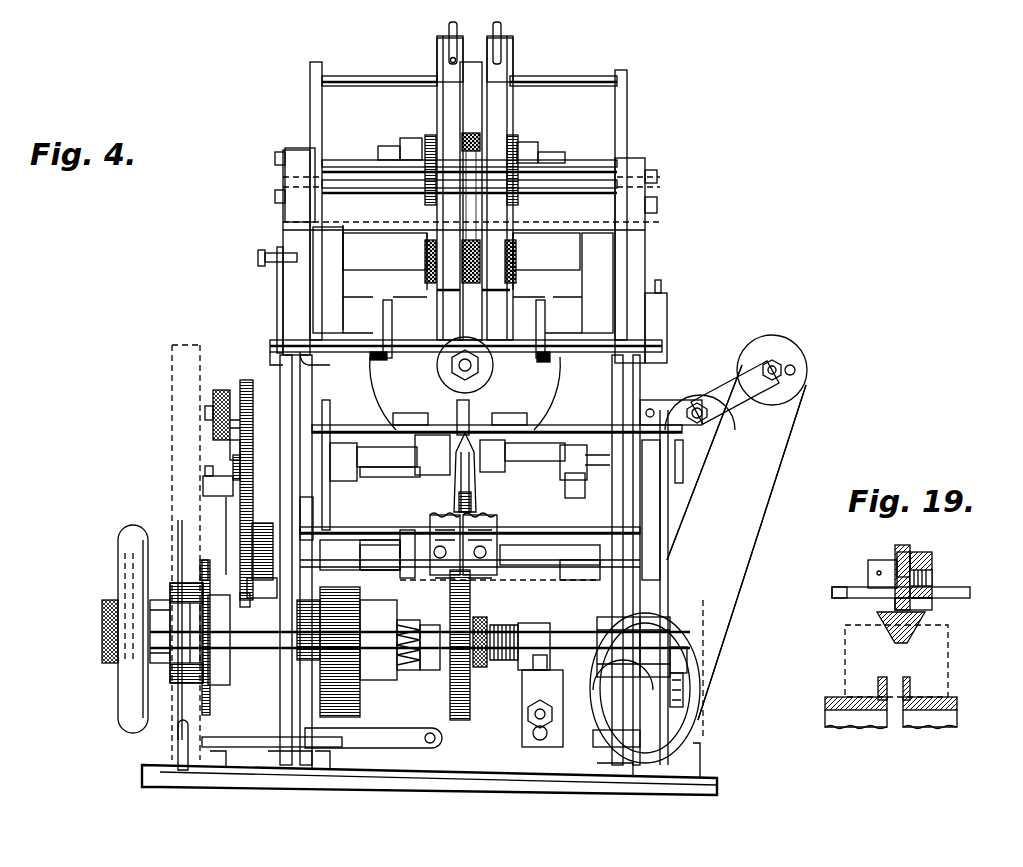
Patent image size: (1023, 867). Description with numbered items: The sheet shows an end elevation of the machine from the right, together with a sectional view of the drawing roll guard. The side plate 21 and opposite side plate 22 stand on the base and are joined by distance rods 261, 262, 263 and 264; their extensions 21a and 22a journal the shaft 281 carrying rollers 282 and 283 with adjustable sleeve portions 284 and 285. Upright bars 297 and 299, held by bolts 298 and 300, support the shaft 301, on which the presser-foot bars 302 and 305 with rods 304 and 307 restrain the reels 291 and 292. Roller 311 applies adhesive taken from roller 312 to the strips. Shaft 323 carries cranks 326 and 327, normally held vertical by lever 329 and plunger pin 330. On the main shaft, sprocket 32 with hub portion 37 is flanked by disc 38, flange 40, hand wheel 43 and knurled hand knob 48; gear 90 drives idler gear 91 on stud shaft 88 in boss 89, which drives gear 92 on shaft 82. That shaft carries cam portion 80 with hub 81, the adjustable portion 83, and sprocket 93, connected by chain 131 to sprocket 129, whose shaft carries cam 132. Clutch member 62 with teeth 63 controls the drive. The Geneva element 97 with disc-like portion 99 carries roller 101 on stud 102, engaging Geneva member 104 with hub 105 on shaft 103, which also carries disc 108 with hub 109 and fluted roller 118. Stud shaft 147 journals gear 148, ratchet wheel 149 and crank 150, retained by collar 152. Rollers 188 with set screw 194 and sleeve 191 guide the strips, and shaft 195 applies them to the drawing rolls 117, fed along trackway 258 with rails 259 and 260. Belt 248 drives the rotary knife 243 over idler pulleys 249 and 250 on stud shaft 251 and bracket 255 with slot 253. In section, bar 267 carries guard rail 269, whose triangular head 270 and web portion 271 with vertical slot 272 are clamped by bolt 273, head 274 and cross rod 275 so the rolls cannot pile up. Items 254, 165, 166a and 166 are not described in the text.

In FIG. 4, the rod 304 is at (449, 26).
In FIG. 4, the bar forming a presser-foot 302 is at (448, 50).
In FIG. 4, the rod 307 is at (503, 26).
In FIG. 4, the second bar forming a presser-foot 305 is at (505, 55).
In FIG. 4, the shaft 301 is at (548, 84).
In FIG. 4, the upright bar 297 is at (312, 105).
In FIG. 4, the reel 291 is at (437, 105).
In FIG. 4, the reel 292 is at (513, 105).
In FIG. 4, the bar 299 is at (627, 105).
In FIG. 4, the sleeve portion 284 is at (410, 138).
In FIG. 4, the roller 282 is at (385, 146).
In FIG. 4, the roller 311 is at (525, 137).
In FIG. 4, the sleeve portion 285 is at (540, 144).
In FIG. 4, the second roller 283 is at (553, 152).
In FIG. 4, the shaft 281 is at (575, 160).
In FIG. 4, the bolts 298 is at (283, 170).
In FIG. 4, the extension 21a is at (283, 220).
In FIG. 4, the plunger pin 330 is at (258, 257).
In FIG. 4, the lever 329 is at (277, 296).
In FIG. 4, the housing 254 is at (395, 268).
In FIG. 4, the roller 312 is at (518, 257).
In FIG. 4, the bolts 300 is at (657, 205).
In FIG. 4, the extension 22a is at (645, 228).
In FIG. 4, the crank 326 is at (388, 323).
In FIG. 4, the crank 327 is at (537, 323).
In FIG. 4, the shaft 323 is at (466, 355).
In FIG. 4, the sprocket 129 is at (326, 405).
In FIG. 4, the distance rod 264 is at (431, 383).
In FIG. 19, the distance rod 264 is at (838, 590).
In FIG. 4, the rotary knife 243 is at (558, 370).
In FIG. 4, the sleeve portion 191 is at (412, 413).
In FIG. 4, the set screw 194 is at (523, 397).
In FIG. 4, the roller 188 is at (480, 415).
In FIG. 4, the distance rod 263 is at (345, 425).
In FIG. 4, the rack 165 is at (245, 378).
In FIG. 4, the knurled knob 166a is at (225, 390).
In FIG. 4, the knob stud 166 is at (210, 412).
In FIG. 4, the gear 148 is at (240, 450).
In FIG. 4, the ratchet wheel 149 is at (240, 462).
In FIG. 4, the collar 152 is at (205, 475).
In FIG. 4, the stud shaft 147 is at (203, 487).
In FIG. 4, the crank 150 is at (222, 500).
In FIG. 4, the shaft 195 is at (361, 465).
In FIG. 4, the chain 131 is at (325, 520).
In FIG. 4, the cam portion 80 is at (455, 495).
In FIG. 4, the rail 260 is at (428, 525).
In FIG. 19, the rail 260 is at (832, 698).
In FIG. 4, the gear 92 is at (262, 543).
In FIG. 4, the sprocket 93 is at (330, 540).
In FIG. 4, the shaft 103 is at (362, 538).
In FIG. 4, the rail 259 is at (500, 520).
In FIG. 19, the rail 259 is at (957, 698).
In FIG. 4, the cam 132 is at (545, 482).
In FIG. 4, the hub 109 is at (578, 478).
In FIG. 4, the distance rod 262 is at (545, 530).
In FIG. 4, the distance rod 261 is at (570, 545).
In FIG. 4, the idler pulley 249 is at (790, 342).
In FIG. 4, the stud shaft 251 is at (780, 360).
In FIG. 4, the slot 253 is at (795, 370).
In FIG. 4, the idler pulley 250 is at (697, 385).
In FIG. 4, the bracket 255 is at (660, 430).
In FIG. 4, the Geneva member 104 is at (672, 458).
In FIG. 4, the belt 248 is at (768, 450).
In FIG. 4, the hub 105 is at (650, 548).
In FIG. 4, the sprocket 32 is at (205, 560).
In FIG. 4, the hub portion 37 is at (188, 590).
In FIG. 4, the idler gear 91 is at (262, 583).
In FIG. 4, the stud shaft 88 is at (262, 600).
In FIG. 4, the boss 89 is at (322, 590).
In FIG. 4, the hub 81 is at (380, 554).
In FIG. 4, the shaft 82 is at (540, 590).
In FIG. 4, the cam portion 83 is at (405, 612).
In FIG. 4, the fluted roller 118 is at (490, 588).
In FIG. 4, the disc-like member 108 is at (492, 605).
In FIG. 4, the disc-like portion 99 is at (690, 621).
In FIG. 4, the stud 102 is at (690, 653).
In FIG. 4, the roller 101 is at (690, 672).
In FIG. 4, the knurled hand knob 48 is at (102, 645).
In FIG. 4, the gear 90 is at (235, 660).
In FIG. 4, the flange 40 is at (225, 665).
In FIG. 4, the side plate 21 is at (282, 695).
In FIG. 4, the disc 38 is at (207, 700).
In FIG. 4, the hand wheel 43 is at (125, 725).
In FIG. 4, the teeth 63 is at (400, 675).
In FIG. 4, the clutch member 62 is at (428, 675).
In FIG. 4, the side plate 22 is at (587, 701).
In FIG. 4, the Geneva movement element 97 is at (672, 710).
In FIG. 19, the guard rail 269 is at (910, 550).
In FIG. 19, the vertical slot 272 is at (897, 560).
In FIG. 19, the bar 267 is at (932, 563).
In FIG. 19, the head 274 is at (868, 566).
In FIG. 19, the bolt 273 is at (935, 578).
In FIG. 19, the cross rod 275 is at (877, 574).
In FIG. 19, the web portion 271 is at (895, 603).
In FIG. 19, the head 270 is at (925, 620).
In FIG. 19, the drawing rolls 117 is at (948, 645).
In FIG. 19, the trackway 258 is at (905, 702).